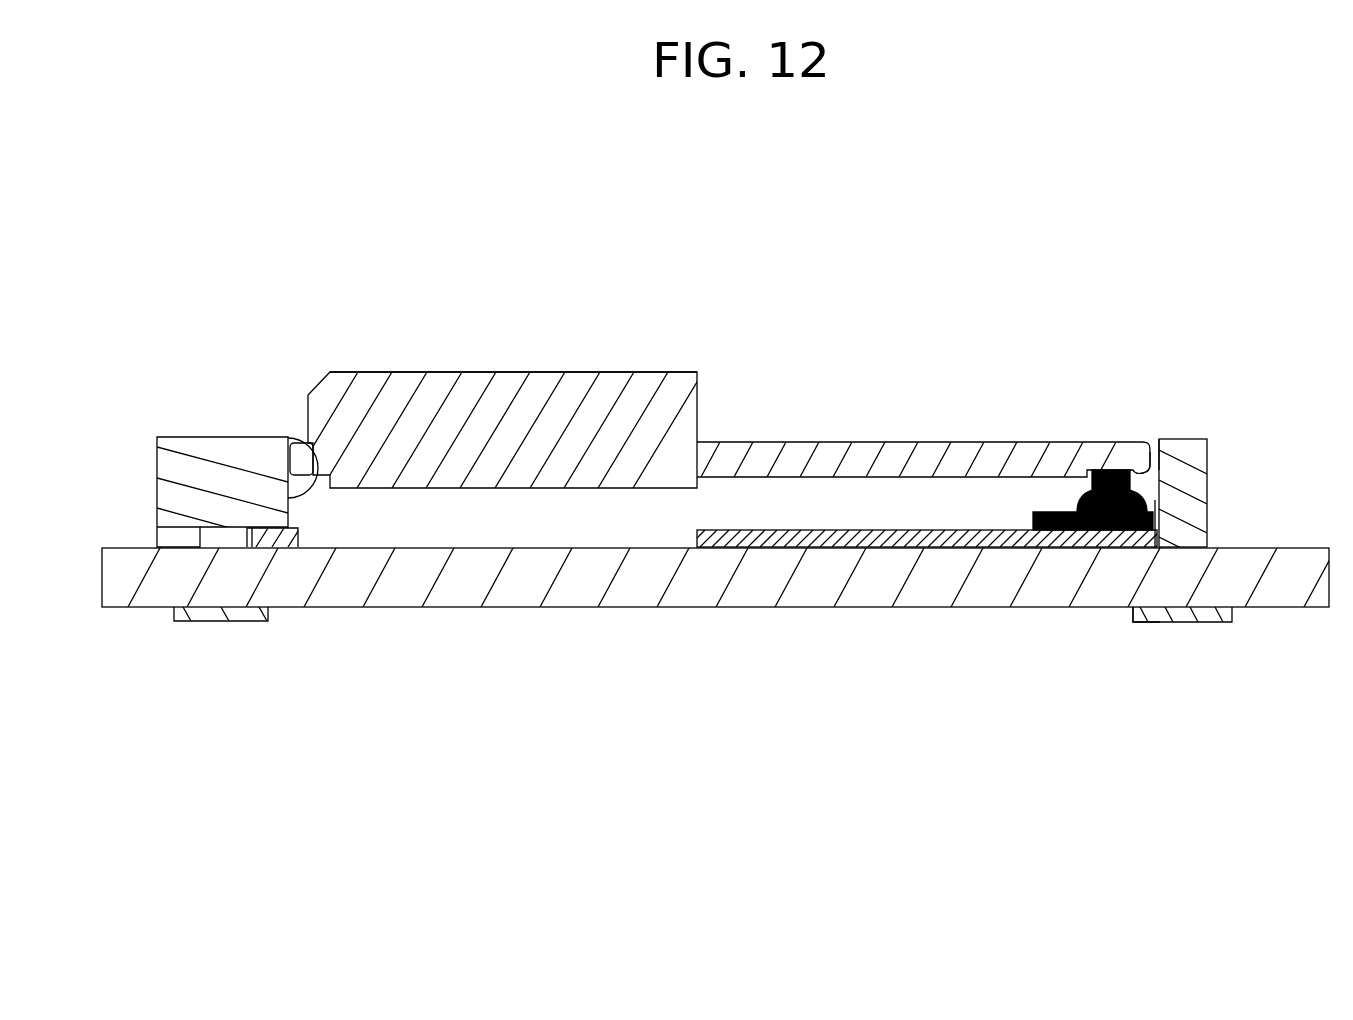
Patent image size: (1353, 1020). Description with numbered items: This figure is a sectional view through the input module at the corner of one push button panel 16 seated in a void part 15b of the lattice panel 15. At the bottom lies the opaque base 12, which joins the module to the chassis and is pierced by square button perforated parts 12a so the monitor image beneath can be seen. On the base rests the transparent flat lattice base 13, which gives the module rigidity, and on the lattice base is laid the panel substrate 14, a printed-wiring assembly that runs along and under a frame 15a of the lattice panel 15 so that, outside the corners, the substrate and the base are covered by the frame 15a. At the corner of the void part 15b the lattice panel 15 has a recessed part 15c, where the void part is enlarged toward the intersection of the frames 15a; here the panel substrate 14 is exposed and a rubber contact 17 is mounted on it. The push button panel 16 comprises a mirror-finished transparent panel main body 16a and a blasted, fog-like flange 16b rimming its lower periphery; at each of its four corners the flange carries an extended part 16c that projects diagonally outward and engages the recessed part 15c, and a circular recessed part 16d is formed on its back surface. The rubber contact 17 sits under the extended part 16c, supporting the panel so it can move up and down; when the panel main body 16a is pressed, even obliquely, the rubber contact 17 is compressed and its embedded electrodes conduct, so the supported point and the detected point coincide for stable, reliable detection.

The base 12 is at (1197, 615).
The button perforated part 12a is at (1132, 610).
The lattice base 13 is at (990, 600).
The panel substrate 14 is at (917, 517).
The lattice panel 15 is at (213, 425).
The frame 15a is at (1195, 457).
The void part 15b is at (303, 448).
The recessed part 15c is at (1147, 466).
The push button panel 16 is at (433, 357).
The panel main body 16a is at (507, 385).
The flange 16b is at (805, 448).
The extended part 16c is at (1122, 448).
The recessed part 16d is at (1113, 472).
The rubber contact 17 is at (1160, 518).